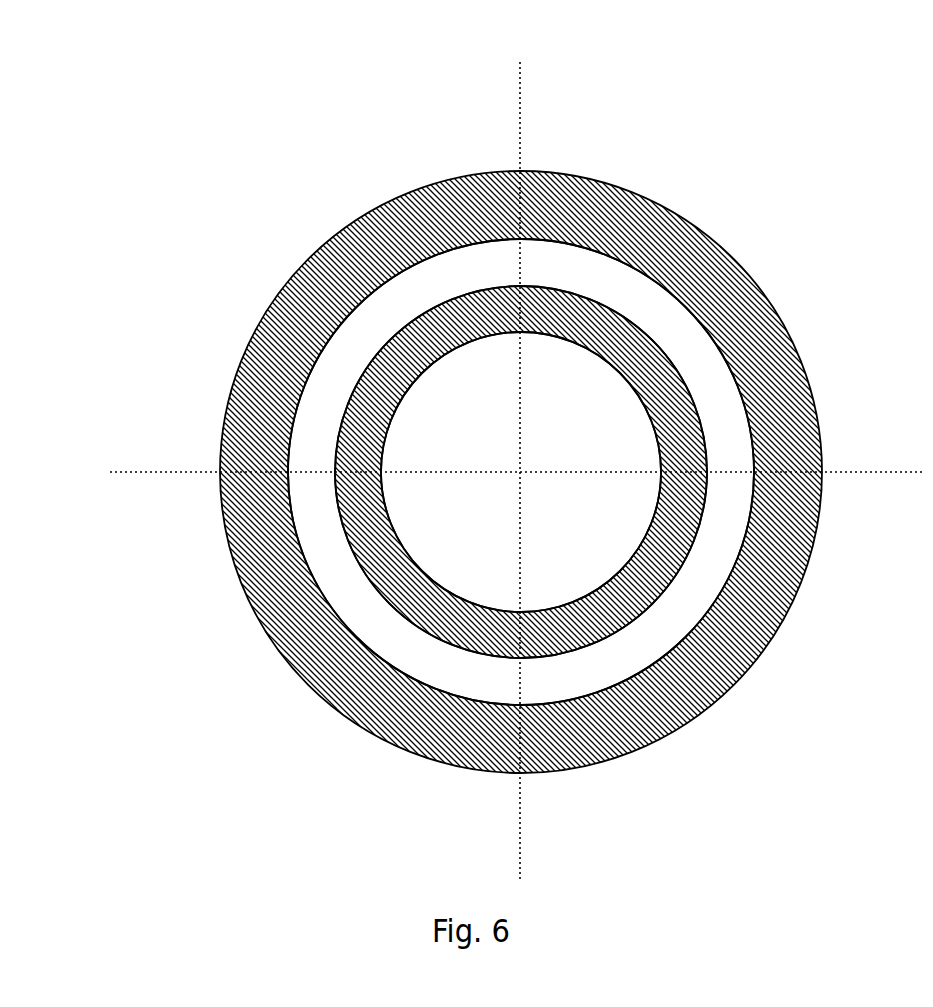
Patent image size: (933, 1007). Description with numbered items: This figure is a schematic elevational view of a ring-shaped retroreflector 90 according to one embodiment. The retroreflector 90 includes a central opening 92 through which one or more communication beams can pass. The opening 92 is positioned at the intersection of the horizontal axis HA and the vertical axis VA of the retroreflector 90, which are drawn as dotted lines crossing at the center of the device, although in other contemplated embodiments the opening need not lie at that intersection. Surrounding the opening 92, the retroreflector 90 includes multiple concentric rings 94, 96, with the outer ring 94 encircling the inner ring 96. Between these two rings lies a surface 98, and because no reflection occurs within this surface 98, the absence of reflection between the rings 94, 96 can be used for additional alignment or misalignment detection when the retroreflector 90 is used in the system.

The retroreflector 90 is at (780, 134).
The opening 92 is at (579, 434).
The concentric ring 94 is at (685, 267).
The concentric ring 96 is at (525, 316).
The surface 98 is at (561, 687).
The vertical axis VA is at (520, 91).
The horizontal axis HA is at (140, 472).